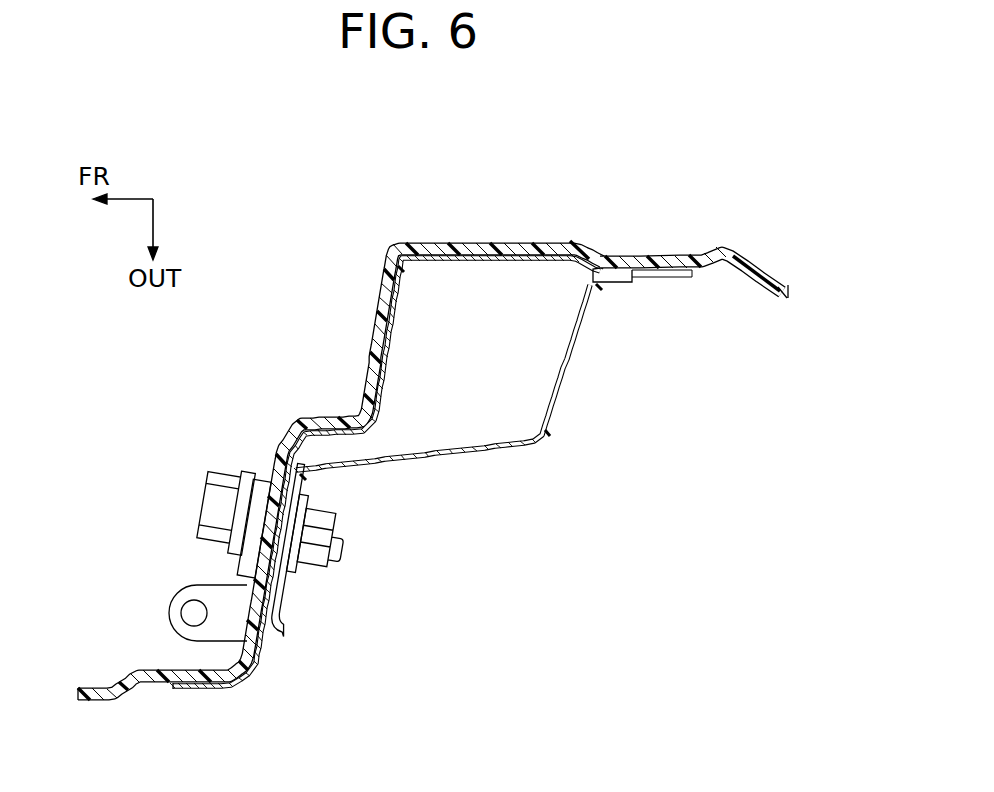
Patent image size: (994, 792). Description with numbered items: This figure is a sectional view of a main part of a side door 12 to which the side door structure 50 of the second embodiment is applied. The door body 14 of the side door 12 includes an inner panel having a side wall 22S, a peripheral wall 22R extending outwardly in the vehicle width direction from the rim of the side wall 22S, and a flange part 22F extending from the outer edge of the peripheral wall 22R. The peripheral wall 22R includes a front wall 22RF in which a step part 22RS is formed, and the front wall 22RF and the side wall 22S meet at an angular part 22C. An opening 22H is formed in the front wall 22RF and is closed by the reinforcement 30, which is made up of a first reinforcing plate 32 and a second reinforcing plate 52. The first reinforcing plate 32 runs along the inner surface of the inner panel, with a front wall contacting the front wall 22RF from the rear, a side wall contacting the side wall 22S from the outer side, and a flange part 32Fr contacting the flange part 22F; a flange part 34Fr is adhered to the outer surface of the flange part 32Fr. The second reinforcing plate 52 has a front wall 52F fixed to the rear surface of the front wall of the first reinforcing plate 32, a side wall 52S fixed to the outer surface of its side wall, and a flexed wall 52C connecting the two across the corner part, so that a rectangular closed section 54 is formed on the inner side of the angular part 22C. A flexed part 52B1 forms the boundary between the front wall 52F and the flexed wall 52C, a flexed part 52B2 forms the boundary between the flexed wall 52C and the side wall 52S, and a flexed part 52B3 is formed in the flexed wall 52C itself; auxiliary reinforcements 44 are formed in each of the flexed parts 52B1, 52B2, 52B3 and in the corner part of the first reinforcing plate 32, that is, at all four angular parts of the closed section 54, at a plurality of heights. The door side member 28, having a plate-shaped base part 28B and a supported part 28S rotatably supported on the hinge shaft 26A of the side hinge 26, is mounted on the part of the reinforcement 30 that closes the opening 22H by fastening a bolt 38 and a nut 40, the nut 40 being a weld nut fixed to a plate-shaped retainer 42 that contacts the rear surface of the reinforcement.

The side door 12 is at (694, 207).
The door body 14 is at (662, 222).
The angular part 22C is at (393, 247).
The side wall 22S is at (447, 243).
The peripheral wall 22R is at (390, 262).
The step part 22RS is at (372, 337).
The front wall 22RF is at (251, 447).
The opening 22H is at (252, 448).
The flange part 22F is at (147, 685).
The closed section 54 is at (466, 300).
The auxiliary reinforcements 44 is at (404, 272).
The second reinforcing plate 52 is at (487, 455).
The flexed part 52B1 is at (262, 455).
The flexed part 52B2 is at (583, 282).
The flexed part 52B3 is at (556, 440).
The flexed wall 52C is at (505, 449).
The front wall 52F is at (262, 650).
The side wall 52S is at (693, 278).
The first reinforcing plate 32 is at (396, 362).
The flange part 32Fr is at (200, 692).
The flange part 34Fr is at (213, 698).
The reinforcement 30 is at (414, 514).
The side door structure 50 is at (425, 514).
The bolt 38 is at (346, 538).
The nut 40 is at (302, 576).
The retainer 42 is at (301, 627).
The side hinge 26 is at (168, 636).
The hinge shaft 26A is at (184, 616).
The door side member 28 is at (156, 560).
The base part 28B is at (243, 577).
The supported part 28S is at (167, 585).